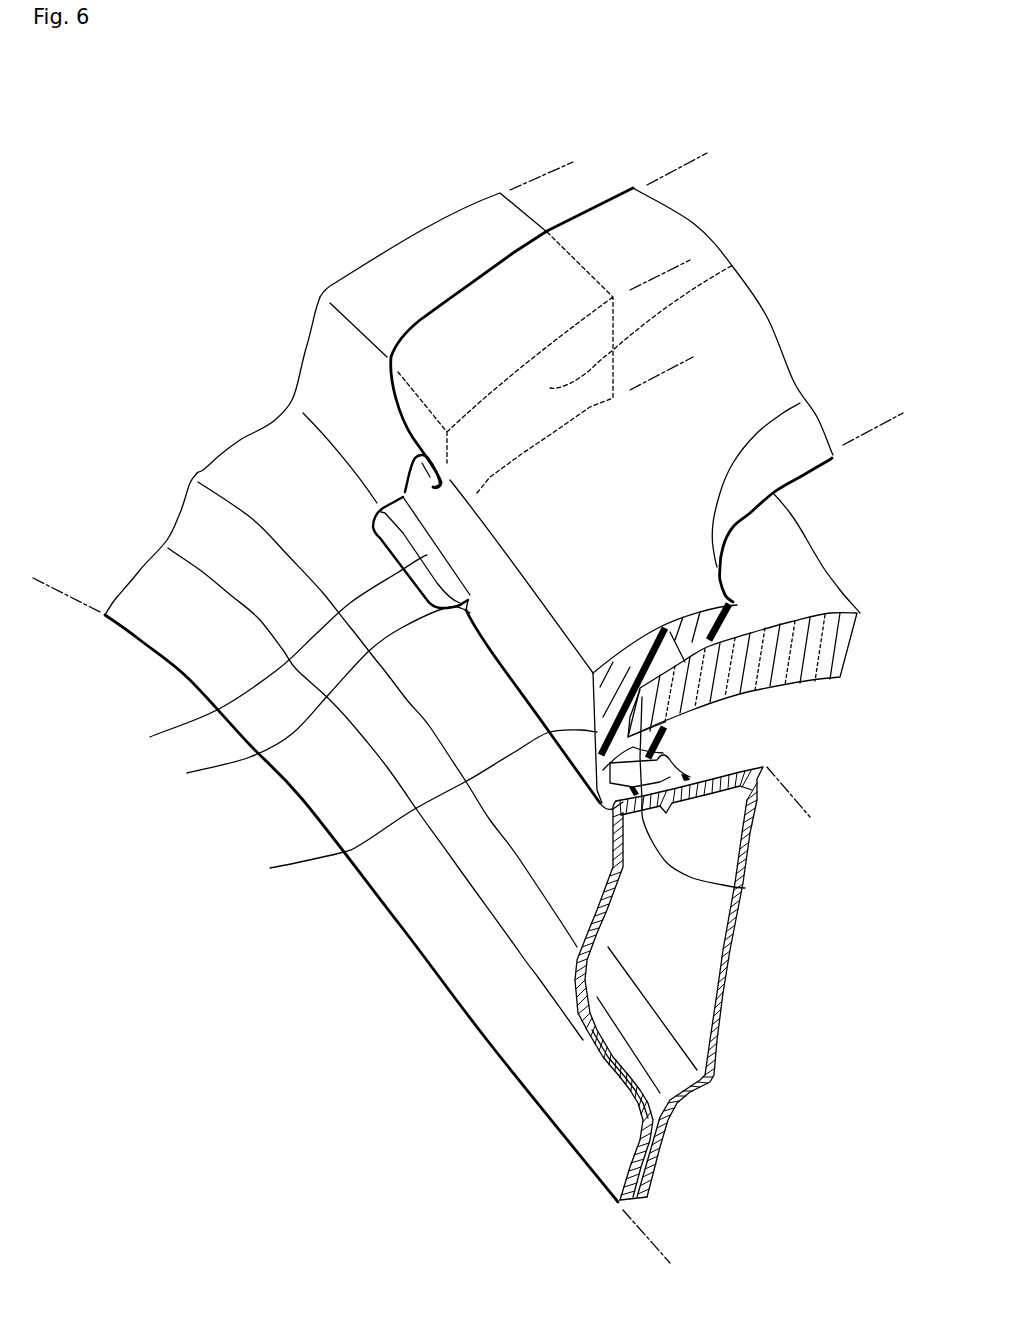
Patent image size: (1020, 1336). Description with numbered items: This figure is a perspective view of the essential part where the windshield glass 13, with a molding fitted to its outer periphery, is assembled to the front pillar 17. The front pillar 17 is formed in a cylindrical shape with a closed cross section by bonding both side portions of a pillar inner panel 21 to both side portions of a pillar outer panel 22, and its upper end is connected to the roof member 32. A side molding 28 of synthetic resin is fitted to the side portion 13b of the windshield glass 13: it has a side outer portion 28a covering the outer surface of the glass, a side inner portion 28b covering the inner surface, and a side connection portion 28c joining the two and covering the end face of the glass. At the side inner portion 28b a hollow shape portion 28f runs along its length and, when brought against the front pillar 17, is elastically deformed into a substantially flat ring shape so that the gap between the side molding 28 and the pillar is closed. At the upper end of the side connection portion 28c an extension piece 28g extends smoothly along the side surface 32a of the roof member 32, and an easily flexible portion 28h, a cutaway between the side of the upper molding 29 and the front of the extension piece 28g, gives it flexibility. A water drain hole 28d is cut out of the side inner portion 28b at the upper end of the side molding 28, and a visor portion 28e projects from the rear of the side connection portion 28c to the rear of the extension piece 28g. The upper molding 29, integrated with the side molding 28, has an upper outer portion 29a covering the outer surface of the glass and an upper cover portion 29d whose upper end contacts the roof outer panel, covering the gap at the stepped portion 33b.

The windshield glass 13 is at (769, 690).
The side portion of the windshield glass 13b is at (745, 888).
The front pillar 17 is at (369, 887).
The pillar inner panel 21 is at (735, 928).
The pillar outer panel 22 is at (577, 987).
The side molding 28 is at (505, 683).
The side outer portion 28a is at (740, 618).
The side inner portion 28b is at (632, 742).
The side connection portion 28c is at (363, 843).
The water drain hole 28d is at (280, 745).
The visor portion 28e is at (220, 712).
The hollow shape portion 28f is at (680, 765).
The extension piece 28g is at (423, 492).
The easily flexible portion 28h is at (424, 456).
The upper molding 29 is at (615, 189).
The upper outer portion 29a is at (777, 450).
The upper cover portion 29d is at (677, 240).
The roof member 32 is at (458, 210).
The side surface of the roof member 32a is at (338, 395).
The stepped portion 33b is at (738, 263).